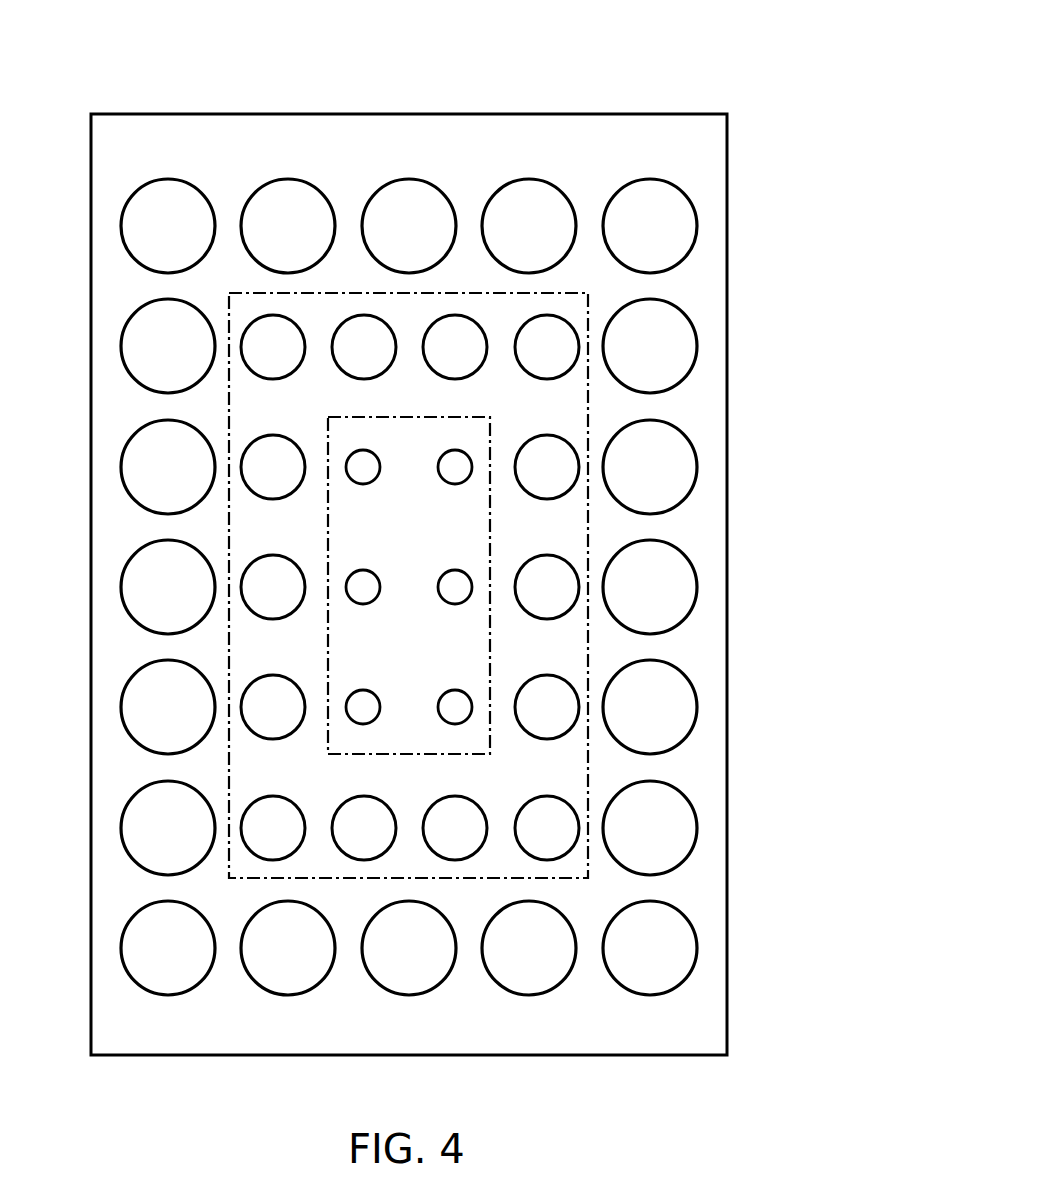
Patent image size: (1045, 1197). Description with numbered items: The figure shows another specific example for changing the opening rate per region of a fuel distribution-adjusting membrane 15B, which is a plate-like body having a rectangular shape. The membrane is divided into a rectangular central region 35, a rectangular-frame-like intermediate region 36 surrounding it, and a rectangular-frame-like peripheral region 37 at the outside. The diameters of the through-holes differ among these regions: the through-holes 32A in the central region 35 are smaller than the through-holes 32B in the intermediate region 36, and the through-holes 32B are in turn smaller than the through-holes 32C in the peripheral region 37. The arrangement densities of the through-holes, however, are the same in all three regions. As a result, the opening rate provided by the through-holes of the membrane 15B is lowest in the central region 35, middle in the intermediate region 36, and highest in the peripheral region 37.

The fuel distribution-adjusting membrane 15B is at (465, 531).
The through-holes 32A is at (452, 451).
The through-holes 32B is at (547, 481).
The through-holes 32C is at (655, 182).
The central region 35 is at (465, 643).
The intermediate region 36 is at (563, 768).
The peripheral region 37 is at (710, 292).